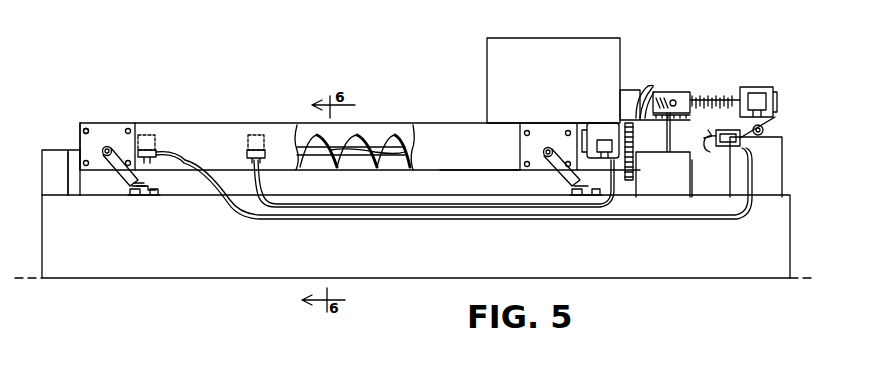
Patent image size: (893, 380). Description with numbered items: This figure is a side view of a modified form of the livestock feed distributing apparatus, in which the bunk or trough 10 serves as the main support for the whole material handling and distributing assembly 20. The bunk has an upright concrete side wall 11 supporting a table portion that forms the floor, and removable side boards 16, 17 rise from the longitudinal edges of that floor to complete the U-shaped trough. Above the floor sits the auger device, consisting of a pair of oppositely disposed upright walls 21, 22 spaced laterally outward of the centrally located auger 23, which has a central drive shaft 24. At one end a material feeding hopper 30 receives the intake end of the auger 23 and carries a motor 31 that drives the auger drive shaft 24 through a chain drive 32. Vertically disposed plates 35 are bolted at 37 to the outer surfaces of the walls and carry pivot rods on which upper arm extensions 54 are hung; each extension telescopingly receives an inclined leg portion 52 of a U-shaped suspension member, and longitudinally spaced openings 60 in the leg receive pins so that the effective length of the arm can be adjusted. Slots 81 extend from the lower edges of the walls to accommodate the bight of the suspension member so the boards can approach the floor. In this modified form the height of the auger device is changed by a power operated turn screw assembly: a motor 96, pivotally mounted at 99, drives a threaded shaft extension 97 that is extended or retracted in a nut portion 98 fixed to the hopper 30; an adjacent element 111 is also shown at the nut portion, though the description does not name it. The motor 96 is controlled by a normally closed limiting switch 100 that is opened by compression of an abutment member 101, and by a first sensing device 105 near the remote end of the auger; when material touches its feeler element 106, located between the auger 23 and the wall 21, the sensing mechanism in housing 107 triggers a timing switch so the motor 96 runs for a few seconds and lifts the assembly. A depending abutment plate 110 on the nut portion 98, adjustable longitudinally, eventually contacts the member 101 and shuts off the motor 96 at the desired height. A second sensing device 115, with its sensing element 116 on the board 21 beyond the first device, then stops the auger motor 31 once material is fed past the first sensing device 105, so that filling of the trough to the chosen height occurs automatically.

The bunk or trough 10 is at (38, 196).
The upright concrete side wall 11 is at (404, 253).
The removable side board 16 is at (62, 174).
The removable side board 17 is at (90, 191).
The material handling and distributing assembly 20 is at (433, 122).
The upright wall 21 is at (450, 128).
The upright wall 22 is at (377, 128).
The auger 23 is at (390, 140).
The auger drive shaft 24 is at (394, 162).
The material feeding hopper 30 is at (602, 48).
The motor 31 is at (600, 128).
The chain drive 32 is at (636, 140).
The plate 35 is at (96, 128).
The bolt 37 is at (82, 127).
The leg portion 52 is at (136, 192).
The upper arm extension 54 is at (117, 166).
The opening 60 is at (152, 183).
The slot 81 is at (184, 160).
The motor 96 is at (766, 90).
The threaded shaft extension 97 is at (706, 100).
The nut portion 98 is at (632, 90).
The pivotal mounting 99 is at (760, 138).
The limiting switch 100 is at (724, 130).
The abutment member 101 is at (712, 146).
The first sensing device 105 is at (246, 150).
The feeler element 106 is at (256, 135).
The sensing mechanism housing 107 is at (266, 160).
The depending abutment plate 110 is at (680, 158).
The coil 111 is at (649, 96).
The second sensing device 115 is at (135, 148).
The sensing element 116 is at (150, 135).